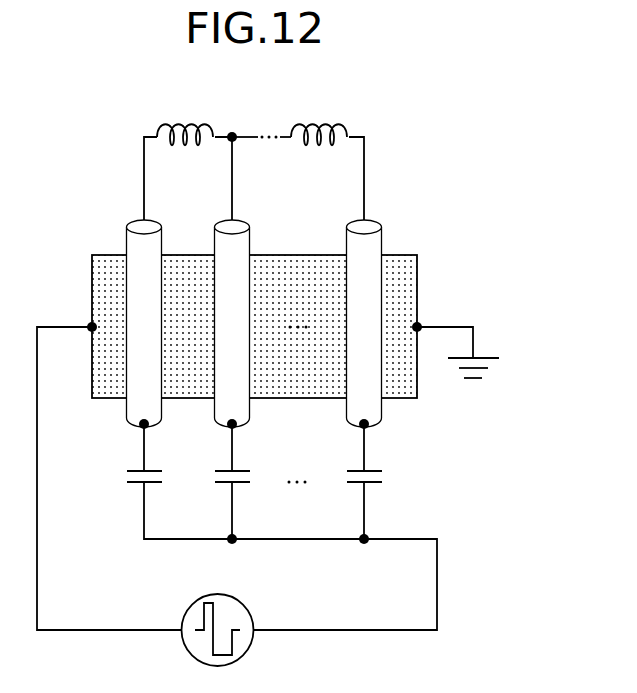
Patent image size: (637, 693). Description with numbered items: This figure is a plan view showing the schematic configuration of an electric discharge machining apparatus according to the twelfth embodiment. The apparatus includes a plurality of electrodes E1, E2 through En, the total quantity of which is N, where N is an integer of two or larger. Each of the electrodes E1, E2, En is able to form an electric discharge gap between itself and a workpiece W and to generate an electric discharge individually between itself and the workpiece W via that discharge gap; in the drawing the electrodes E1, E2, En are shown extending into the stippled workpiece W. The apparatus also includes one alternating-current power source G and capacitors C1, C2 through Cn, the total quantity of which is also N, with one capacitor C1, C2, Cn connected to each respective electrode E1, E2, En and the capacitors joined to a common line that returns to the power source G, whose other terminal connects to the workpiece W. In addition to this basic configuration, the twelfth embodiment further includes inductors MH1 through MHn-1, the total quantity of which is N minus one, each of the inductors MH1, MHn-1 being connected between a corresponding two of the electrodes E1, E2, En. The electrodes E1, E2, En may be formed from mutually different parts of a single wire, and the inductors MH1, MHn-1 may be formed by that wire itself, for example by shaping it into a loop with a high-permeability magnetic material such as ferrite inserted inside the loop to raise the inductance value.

The workpiece W is at (92, 268).
The electrode E1 is at (161, 223).
The electrode E2 is at (249, 223).
The electrode En is at (381, 223).
The inductor MH1 is at (190, 124).
The inductor MHn-1 is at (322, 124).
The capacitor C1 is at (156, 471).
The capacitor C2 is at (244, 471).
The capacitor Cn is at (376, 471).
The alternating-current power source G is at (248, 603).